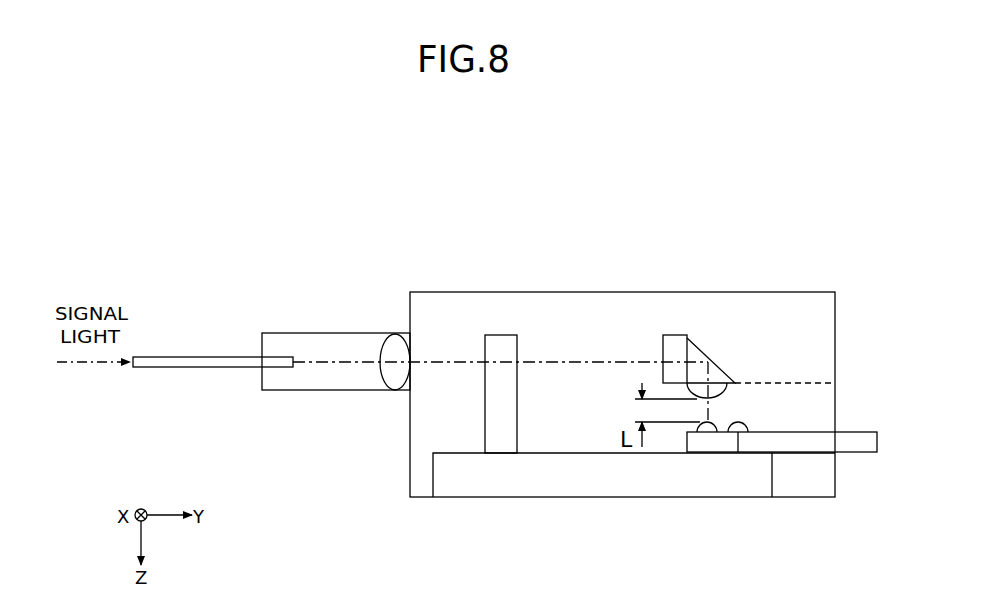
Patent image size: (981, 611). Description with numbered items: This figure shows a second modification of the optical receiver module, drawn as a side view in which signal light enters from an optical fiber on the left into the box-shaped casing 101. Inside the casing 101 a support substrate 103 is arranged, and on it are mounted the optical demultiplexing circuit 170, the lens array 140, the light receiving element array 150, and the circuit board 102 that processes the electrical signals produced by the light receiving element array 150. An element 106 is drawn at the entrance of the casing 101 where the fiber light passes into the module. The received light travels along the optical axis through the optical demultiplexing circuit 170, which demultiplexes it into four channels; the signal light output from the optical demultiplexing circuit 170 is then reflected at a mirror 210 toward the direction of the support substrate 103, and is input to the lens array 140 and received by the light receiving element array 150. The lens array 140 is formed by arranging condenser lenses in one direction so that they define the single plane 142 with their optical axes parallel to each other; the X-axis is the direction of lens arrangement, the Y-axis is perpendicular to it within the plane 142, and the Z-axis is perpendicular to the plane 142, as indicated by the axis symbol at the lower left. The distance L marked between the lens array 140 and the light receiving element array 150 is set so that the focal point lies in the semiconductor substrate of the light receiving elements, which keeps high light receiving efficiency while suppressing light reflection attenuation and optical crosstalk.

The casing 101 is at (776, 292).
The circuit board 102 is at (855, 432).
The support substrate 103 is at (580, 488).
The optical fiber receptacle with lens 106 is at (388, 351).
The lens array 140 is at (723, 392).
The plane 142 is at (788, 382).
The light receiving element array 150 is at (710, 446).
The optical demultiplexing circuit 170 is at (503, 335).
The mirror 210 is at (689, 344).